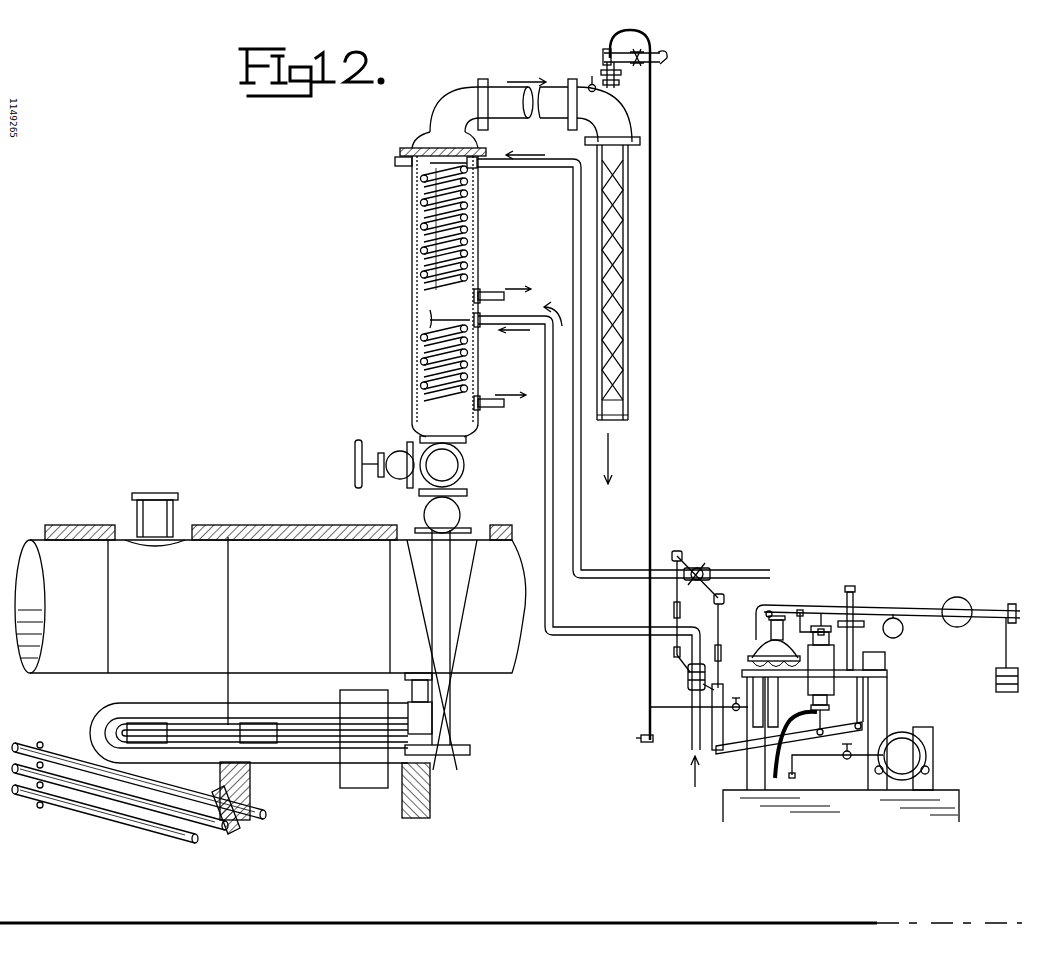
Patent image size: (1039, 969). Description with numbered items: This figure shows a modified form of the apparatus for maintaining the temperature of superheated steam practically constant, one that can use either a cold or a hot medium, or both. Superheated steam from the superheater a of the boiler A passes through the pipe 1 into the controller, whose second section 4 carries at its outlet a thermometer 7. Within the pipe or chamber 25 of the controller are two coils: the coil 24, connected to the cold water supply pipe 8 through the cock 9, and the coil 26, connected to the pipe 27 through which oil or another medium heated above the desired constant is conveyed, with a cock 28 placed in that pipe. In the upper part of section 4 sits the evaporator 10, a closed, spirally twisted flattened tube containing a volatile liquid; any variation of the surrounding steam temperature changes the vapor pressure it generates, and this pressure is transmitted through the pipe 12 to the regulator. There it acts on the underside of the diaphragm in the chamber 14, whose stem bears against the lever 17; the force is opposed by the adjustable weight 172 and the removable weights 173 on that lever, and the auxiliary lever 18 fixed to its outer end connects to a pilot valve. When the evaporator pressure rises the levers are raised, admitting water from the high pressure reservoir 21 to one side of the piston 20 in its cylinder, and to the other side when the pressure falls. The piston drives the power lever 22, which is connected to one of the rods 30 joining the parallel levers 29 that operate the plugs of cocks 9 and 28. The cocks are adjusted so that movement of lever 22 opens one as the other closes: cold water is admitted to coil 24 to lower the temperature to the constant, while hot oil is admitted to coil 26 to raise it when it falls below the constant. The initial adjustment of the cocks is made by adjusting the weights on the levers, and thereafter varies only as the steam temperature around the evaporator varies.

The pipe 1 is at (448, 582).
The second section 4 is at (616, 421).
The thermometer 7 is at (591, 84).
The water supply pipe 8 is at (573, 230).
The cock 9 is at (698, 570).
The evaporator 10 is at (626, 244).
The pipe 12 is at (652, 130).
The chamber 14 is at (772, 652).
The lever 17 is at (778, 606).
The adjustable weight 172 is at (967, 603).
The removable weights 173 is at (998, 684).
The auxiliary lever 18 is at (908, 616).
The piston 20 is at (817, 680).
The high pressure reservoir 21 is at (920, 752).
The power lever 22 is at (738, 748).
The coil 24 is at (463, 232).
The pipe or chamber 25 is at (413, 312).
The coil 26 is at (424, 372).
The pipe 27 is at (546, 452).
The cock 28 is at (690, 684).
The parallel levers 29 is at (717, 592).
The rods 30 is at (680, 585).
The boiler A is at (270, 609).
The superheater a is at (172, 705).